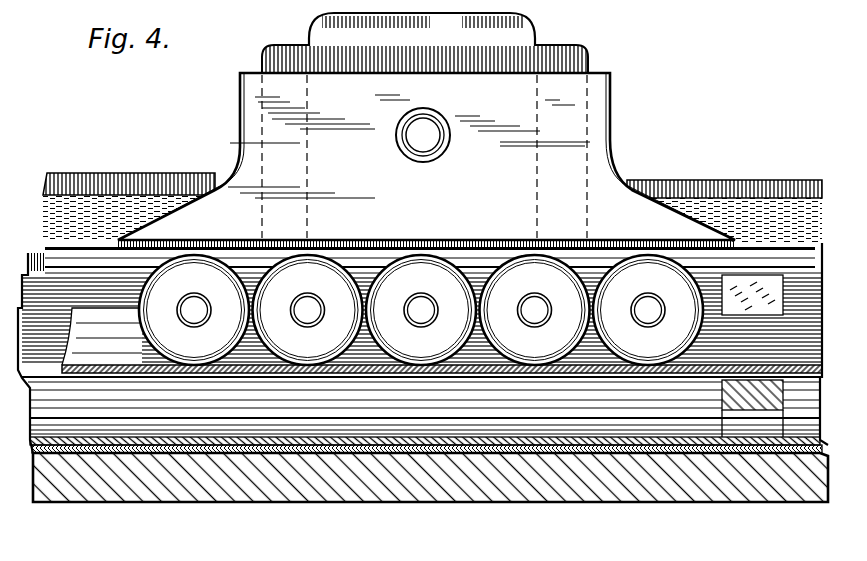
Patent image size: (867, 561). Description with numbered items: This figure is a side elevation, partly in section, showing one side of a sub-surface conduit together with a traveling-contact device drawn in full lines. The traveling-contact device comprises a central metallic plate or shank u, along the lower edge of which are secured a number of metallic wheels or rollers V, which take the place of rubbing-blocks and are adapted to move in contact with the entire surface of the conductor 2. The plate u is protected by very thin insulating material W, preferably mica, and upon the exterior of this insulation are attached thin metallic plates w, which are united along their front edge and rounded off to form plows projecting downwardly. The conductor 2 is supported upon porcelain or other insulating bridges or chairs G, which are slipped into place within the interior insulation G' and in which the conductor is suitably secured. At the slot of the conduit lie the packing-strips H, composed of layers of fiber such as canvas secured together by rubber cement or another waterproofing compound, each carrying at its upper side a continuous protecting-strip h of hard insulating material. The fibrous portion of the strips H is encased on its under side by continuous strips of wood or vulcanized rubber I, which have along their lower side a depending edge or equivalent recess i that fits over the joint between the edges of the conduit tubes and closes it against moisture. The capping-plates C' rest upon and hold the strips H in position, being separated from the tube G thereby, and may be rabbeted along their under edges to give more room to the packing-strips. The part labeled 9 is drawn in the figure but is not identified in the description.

The central metallic plate or shank u is at (422, 29).
The thin insulating material W is at (585, 66).
The thin metallic plates w is at (426, 156).
The protecting-strips h is at (97, 194).
The packing-strips H is at (755, 194).
The capping-plates C' is at (124, 189).
The strips of wood or vulcanized rubber I is at (45, 237).
The depending edge or recess i is at (45, 259).
The conductor 2 is at (102, 336).
The metallic wheels or rollers V is at (421, 310).
The interior insulation G' is at (422, 405).
The insulating bridges or chairs G is at (415, 438).
The block 9 is at (752, 405).